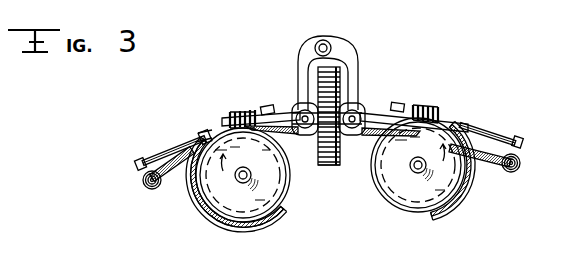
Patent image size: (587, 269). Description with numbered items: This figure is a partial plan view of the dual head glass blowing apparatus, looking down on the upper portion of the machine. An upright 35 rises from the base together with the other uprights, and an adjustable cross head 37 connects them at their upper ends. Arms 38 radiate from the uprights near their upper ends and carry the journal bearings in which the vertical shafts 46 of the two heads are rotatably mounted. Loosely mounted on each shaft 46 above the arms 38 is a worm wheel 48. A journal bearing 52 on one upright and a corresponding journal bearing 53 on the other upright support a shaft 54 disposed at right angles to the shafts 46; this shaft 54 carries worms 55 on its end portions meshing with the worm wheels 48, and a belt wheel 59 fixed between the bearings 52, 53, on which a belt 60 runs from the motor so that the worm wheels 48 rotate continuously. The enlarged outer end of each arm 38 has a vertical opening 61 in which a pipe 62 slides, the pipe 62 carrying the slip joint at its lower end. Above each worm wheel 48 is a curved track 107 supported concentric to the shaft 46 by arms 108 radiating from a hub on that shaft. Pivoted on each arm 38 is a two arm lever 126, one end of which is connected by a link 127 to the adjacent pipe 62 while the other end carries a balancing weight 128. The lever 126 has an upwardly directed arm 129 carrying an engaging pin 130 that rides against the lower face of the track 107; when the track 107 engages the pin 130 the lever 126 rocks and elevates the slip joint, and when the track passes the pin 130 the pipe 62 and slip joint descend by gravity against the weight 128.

The upright 35 is at (327, 42).
The cross head 37 is at (357, 70).
The arms 38 is at (177, 171).
The shafts 46 is at (251, 178).
The worm wheel 48 is at (228, 212).
The journal bearing 52 is at (357, 107).
The journal bearing 53 is at (302, 109).
The shaft 54 is at (375, 111).
The worms 55 is at (246, 112).
The belt wheel 59 is at (321, 140).
The belt 60 is at (331, 167).
The vertical openings 61 is at (146, 184).
The pipe 62 is at (156, 190).
The curved track 107 is at (200, 216).
The arms 108 is at (247, 226).
The two arm lever 126 is at (193, 148).
The link 127 is at (138, 166).
The balancing weight 128 is at (270, 110).
The arm 129 is at (208, 128).
The engaging pin 130 is at (204, 127).